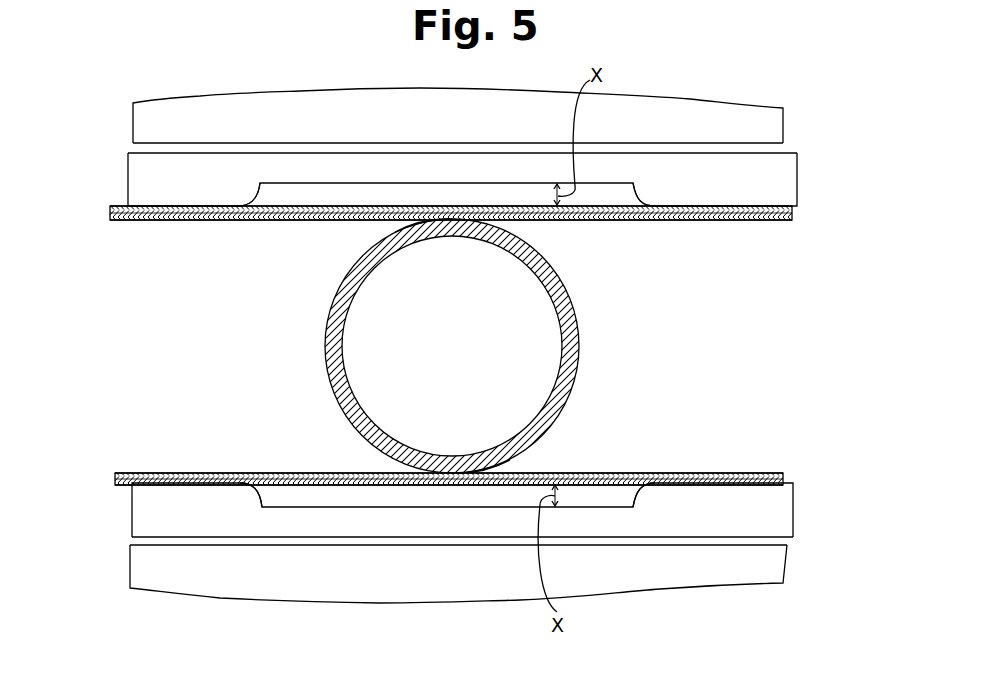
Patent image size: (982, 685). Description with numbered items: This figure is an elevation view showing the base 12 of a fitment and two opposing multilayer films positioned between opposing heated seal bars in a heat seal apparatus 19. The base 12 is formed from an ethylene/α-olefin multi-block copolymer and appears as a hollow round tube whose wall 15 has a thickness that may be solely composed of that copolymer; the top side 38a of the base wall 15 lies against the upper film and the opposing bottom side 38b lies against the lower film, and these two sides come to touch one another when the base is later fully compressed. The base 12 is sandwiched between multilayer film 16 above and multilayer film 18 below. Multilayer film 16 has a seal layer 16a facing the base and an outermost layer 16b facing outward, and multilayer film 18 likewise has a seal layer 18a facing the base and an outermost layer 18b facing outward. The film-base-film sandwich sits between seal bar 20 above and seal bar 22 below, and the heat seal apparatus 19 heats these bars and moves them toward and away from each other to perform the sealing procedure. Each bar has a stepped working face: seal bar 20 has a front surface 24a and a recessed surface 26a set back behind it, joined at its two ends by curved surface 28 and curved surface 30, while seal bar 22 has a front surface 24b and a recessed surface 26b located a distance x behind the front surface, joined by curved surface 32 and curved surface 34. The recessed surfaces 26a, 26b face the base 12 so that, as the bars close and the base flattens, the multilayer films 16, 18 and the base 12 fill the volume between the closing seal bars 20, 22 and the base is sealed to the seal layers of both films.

The base 12 is at (469, 346).
The wall 15 is at (333, 345).
The multilayer film 16 is at (91, 197).
The seal layer 16a is at (795, 218).
The outermost layer 16b is at (797, 208).
The multilayer film 18 is at (102, 483).
The seal layer 18a is at (783, 477).
The outermost layer 18b is at (786, 485).
The heat seal apparatus 19 is at (485, 148).
The seal bar 20 is at (790, 170).
The seal bar 22 is at (795, 513).
The front surface 24a is at (200, 204).
The front surface 24b is at (200, 486).
The recessed surface 26a is at (370, 188).
The recessed surface 26b is at (345, 505).
The curved surface 28 is at (243, 219).
The curved surface 30 is at (641, 208).
The curved surface 32 is at (258, 496).
The curved surface 34 is at (633, 497).
The top side 38a is at (450, 228).
The bottom side 38b is at (457, 463).